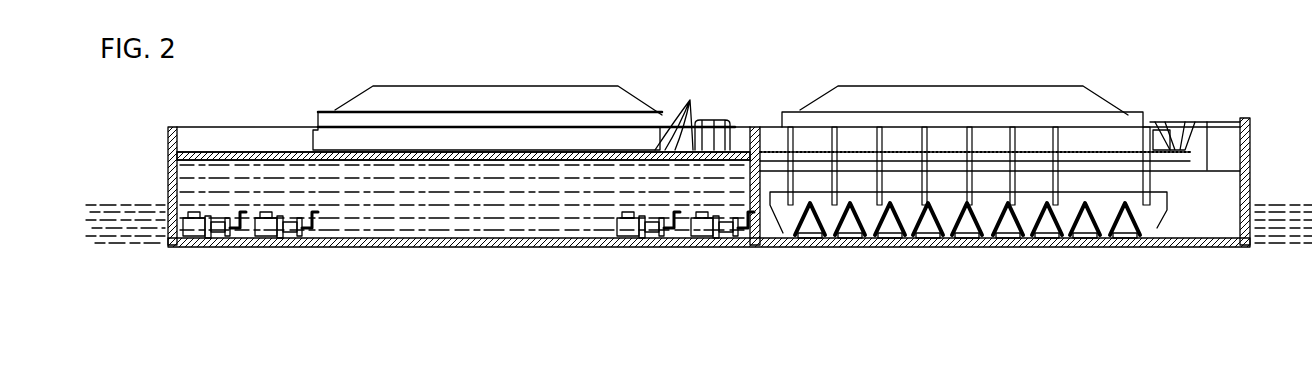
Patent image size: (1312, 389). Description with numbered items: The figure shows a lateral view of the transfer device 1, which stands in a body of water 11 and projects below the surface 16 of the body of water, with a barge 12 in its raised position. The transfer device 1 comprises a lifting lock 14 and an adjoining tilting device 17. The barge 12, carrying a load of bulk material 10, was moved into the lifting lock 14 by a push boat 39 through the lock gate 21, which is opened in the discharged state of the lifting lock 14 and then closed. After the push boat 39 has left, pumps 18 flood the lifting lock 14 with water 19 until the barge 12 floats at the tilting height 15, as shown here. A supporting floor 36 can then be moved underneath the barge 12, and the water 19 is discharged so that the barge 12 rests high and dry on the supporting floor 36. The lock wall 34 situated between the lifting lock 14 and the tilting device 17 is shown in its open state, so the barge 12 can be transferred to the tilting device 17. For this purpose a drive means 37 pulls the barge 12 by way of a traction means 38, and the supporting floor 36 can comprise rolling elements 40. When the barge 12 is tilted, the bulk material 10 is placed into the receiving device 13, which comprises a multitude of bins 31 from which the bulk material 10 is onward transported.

The transfer device 1 is at (1142, 75).
The bulk material 10 is at (558, 92).
The body of water 11 is at (146, 236).
The barge 12 is at (602, 128).
The receiving device 13 is at (1172, 212).
The lifting lock 14 is at (494, 260).
The tilting height 15 is at (240, 150).
The surface of the body of water 16 is at (141, 200).
The tilting device 17 is at (980, 262).
The pumps 18 is at (188, 240).
The water 19 is at (464, 197).
The lock gate 21 is at (180, 142).
The bins 31 is at (805, 240).
The lock wall 34 is at (764, 127).
The supporting floor 36 is at (396, 160).
The drive means 37 is at (1250, 122).
The traction means 38 is at (1220, 118).
The push boat 39 is at (477, 155).
The rolling elements 40 is at (940, 150).